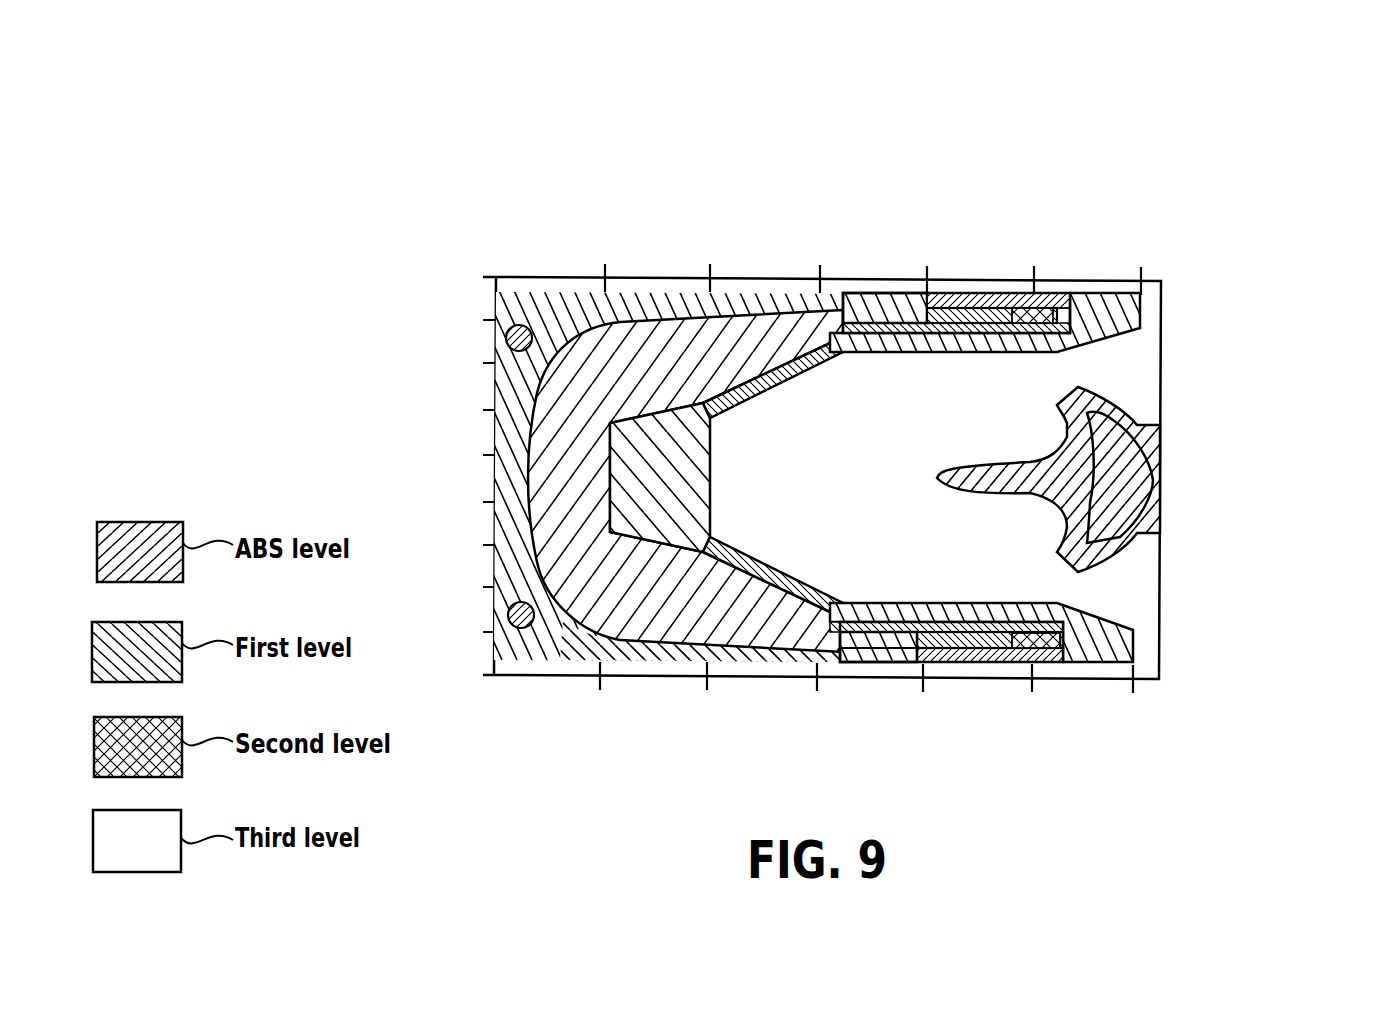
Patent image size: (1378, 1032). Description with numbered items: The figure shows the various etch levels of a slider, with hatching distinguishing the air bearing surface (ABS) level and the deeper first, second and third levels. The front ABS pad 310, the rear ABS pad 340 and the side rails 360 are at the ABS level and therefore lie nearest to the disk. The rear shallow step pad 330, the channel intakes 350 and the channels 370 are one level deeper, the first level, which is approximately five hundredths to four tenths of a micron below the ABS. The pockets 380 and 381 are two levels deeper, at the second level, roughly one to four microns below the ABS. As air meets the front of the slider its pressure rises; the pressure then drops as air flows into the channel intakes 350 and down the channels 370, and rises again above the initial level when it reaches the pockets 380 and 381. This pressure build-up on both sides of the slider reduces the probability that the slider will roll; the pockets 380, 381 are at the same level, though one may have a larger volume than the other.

The front ABS pad 310 is at (577, 495).
The rear shallow step pad 330 is at (1160, 428).
The rear ABS pad 340 is at (1120, 480).
The channel intake 350 is at (883, 298).
The side rail 360 is at (945, 290).
The channel 370 is at (973, 317).
The pocket 380 is at (1027, 293).
The pocket 381 is at (1063, 648).